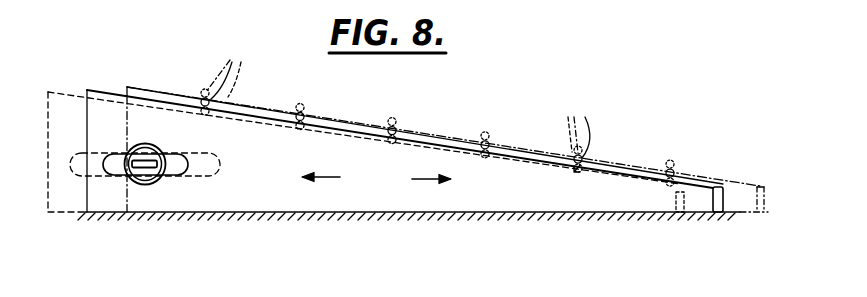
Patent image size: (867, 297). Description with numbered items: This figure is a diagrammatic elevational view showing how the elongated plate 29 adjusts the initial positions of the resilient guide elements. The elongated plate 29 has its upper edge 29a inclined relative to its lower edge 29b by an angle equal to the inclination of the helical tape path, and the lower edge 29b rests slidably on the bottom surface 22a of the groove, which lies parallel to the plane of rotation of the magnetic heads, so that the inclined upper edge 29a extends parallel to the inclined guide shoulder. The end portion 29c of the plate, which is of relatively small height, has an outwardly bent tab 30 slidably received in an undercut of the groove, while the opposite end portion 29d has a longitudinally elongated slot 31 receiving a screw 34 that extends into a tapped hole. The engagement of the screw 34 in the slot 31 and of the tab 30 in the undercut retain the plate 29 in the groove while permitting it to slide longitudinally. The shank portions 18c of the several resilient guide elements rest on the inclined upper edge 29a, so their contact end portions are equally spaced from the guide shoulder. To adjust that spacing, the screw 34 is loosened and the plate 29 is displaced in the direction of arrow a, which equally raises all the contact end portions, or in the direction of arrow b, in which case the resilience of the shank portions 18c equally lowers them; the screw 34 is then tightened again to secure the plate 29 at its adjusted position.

The elongated plate 29 is at (477, 193).
The upper edge 29a is at (319, 125).
The lower edge 29b is at (366, 213).
The end portion 29c is at (709, 190).
The opposite end portion 29d is at (162, 118).
The shank portions 18c is at (603, 113).
The outwardly bent tab 30 is at (717, 213).
The longitudinally elongated slot 31 is at (176, 178).
The screw 34 is at (137, 183).
The bottom surface 22a is at (250, 206).
The arrow a is at (423, 179).
The arrow b is at (328, 177).